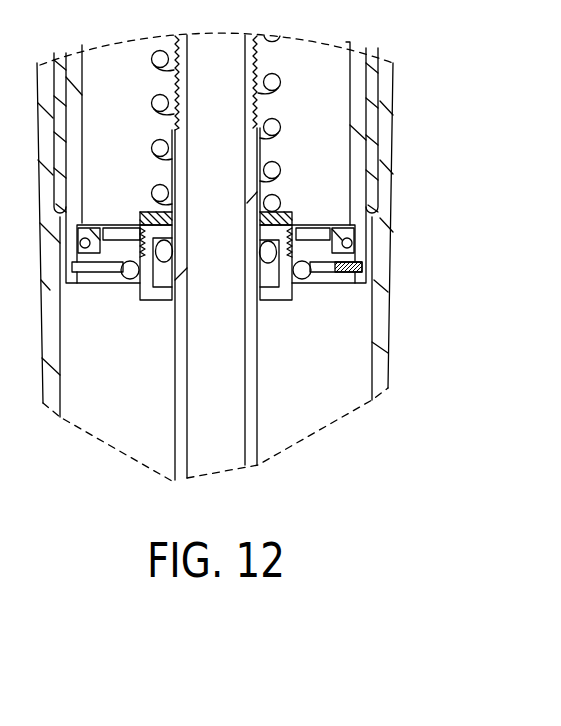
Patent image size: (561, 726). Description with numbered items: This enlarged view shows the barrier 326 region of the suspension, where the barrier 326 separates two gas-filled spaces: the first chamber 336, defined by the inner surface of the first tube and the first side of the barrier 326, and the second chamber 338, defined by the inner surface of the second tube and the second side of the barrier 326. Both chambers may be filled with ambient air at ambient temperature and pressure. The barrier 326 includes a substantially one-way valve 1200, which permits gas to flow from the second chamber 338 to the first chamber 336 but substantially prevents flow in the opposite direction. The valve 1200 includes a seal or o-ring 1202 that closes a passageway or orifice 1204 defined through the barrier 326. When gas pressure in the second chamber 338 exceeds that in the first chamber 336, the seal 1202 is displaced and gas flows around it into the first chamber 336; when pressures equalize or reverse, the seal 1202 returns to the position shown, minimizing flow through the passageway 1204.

The barrier 326 is at (357, 243).
The first chamber 336 is at (150, 390).
The second chamber 338 is at (140, 138).
The substantially one-way valve 1200 is at (274, 302).
The seal or o-ring 1202 is at (308, 275).
The passageway or orifice 1204 is at (300, 252).